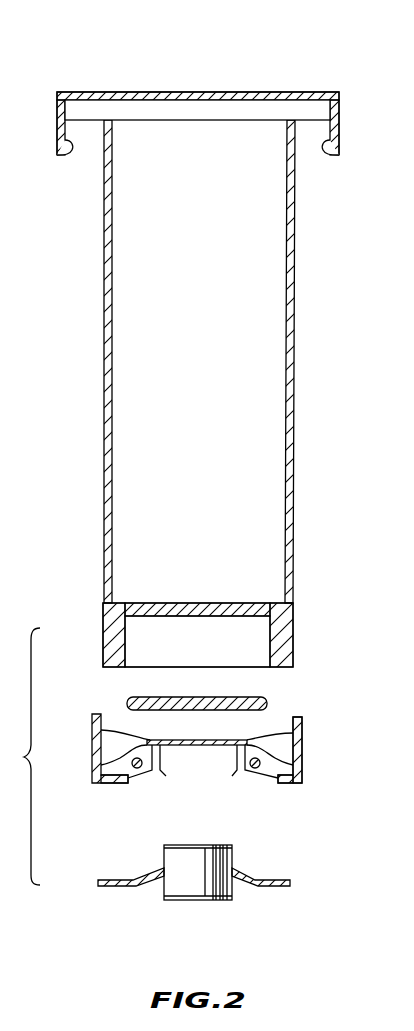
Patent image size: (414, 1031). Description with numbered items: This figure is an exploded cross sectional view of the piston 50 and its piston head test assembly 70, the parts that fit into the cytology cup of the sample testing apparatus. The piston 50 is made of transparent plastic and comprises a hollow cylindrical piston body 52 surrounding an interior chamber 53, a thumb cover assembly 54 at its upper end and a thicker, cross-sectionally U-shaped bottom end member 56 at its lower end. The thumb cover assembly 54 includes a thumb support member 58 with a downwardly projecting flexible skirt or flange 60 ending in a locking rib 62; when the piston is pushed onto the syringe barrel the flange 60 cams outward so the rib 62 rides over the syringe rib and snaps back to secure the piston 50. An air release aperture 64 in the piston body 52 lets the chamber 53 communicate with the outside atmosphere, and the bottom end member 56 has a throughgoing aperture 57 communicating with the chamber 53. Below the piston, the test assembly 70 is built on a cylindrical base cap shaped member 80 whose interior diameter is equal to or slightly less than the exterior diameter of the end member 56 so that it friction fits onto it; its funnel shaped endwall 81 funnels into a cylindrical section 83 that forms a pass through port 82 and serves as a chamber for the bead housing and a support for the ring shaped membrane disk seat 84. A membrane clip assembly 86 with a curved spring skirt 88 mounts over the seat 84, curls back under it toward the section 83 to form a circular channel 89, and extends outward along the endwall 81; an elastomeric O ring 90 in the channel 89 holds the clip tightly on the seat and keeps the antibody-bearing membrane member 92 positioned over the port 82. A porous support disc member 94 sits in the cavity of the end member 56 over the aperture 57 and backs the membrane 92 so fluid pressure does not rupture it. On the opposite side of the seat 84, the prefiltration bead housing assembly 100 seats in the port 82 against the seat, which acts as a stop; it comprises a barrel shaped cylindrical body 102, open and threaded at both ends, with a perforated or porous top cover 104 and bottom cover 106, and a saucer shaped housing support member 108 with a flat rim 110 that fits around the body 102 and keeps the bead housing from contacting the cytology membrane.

The piston 50 is at (210, 361).
The piston body 52 is at (104, 310).
The interior chamber 53 is at (217, 352).
The thumb cover assembly 54 is at (174, 344).
The bottom end member 56 is at (230, 597).
The throughgoing aperture 57 is at (196, 603).
The thumb support member 58 is at (86, 108).
The flexible skirt 60 is at (44, 155).
The locking rib 62 is at (62, 155).
The air release aperture 64 is at (294, 165).
The test assembly 70 is at (208, 749).
The base cap shaped member 80 is at (302, 785).
The funnel shaped endwall 81 is at (140, 780).
The pass through port 82 is at (201, 749).
The cylindrical section 83 is at (167, 770).
The membrane disk seat 84 is at (260, 742).
The membrane clip assembly 86 is at (92, 726).
The curved spring skirt 88 is at (302, 768).
The circular channel 89 is at (248, 780).
The O ring 90 is at (92, 757).
The membrane member 92 is at (158, 740).
The porous support disc member 94 is at (186, 697).
The bead housing assembly 100 is at (236, 887).
The cylindrical body 102 is at (164, 886).
The top cover 104 is at (210, 844).
The bottom cover 106 is at (208, 900).
The housing support member 108 is at (256, 876).
The flat rim 110 is at (116, 884).